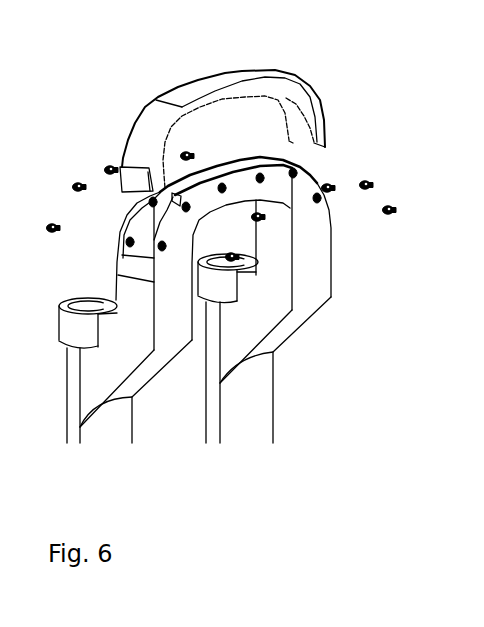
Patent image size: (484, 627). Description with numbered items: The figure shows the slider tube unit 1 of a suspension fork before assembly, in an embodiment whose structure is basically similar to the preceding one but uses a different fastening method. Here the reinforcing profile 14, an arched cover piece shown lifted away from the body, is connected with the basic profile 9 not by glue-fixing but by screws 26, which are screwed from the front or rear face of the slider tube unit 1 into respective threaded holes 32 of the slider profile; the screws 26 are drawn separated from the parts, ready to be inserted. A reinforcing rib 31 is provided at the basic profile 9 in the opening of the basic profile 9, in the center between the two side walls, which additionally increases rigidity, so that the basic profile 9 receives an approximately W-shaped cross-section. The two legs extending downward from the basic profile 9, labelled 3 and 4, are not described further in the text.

The slider tube unit 1 is at (369, 75).
The first support post 3 is at (80, 442).
The second support post 4 is at (260, 427).
The basic profile 9 is at (314, 253).
The reinforcing profile 14 is at (195, 85).
The screws 26 is at (67, 175).
The reinforcing rib 31 is at (168, 188).
The threaded holes 32 is at (305, 173).